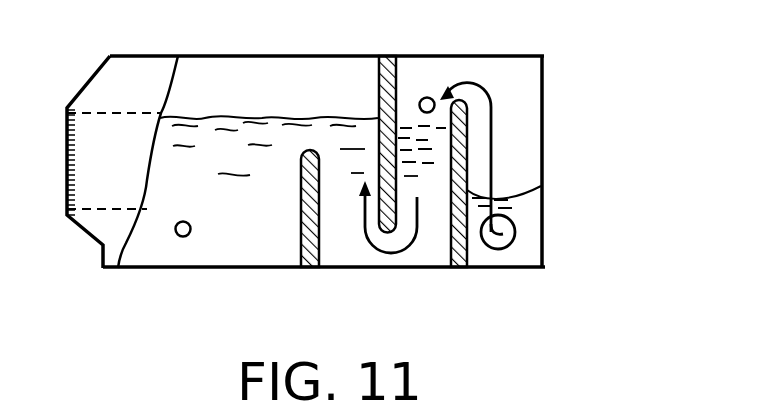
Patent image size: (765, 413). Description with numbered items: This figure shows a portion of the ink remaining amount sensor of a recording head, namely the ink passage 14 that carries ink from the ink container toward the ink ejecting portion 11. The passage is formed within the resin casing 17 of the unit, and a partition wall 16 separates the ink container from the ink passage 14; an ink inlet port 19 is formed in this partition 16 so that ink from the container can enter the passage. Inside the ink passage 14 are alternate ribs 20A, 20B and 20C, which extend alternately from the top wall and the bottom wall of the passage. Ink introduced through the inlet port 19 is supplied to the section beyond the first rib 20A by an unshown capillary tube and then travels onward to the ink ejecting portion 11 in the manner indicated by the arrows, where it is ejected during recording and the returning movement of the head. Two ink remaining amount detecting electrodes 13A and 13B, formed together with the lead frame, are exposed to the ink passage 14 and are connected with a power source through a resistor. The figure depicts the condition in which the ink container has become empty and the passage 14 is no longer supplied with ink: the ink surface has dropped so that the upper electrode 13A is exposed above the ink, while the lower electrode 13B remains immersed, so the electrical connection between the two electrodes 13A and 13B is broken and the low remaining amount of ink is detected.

The ink ejecting portion 11 is at (67, 146).
The ink passage 14 is at (280, 73).
The casing 17 is at (543, 87).
The partition wall 16 is at (527, 158).
The first rib 20A is at (455, 245).
The rib 20B is at (402, 63).
The rib 20C is at (301, 252).
The ink remaining amount detecting electrode 13A is at (430, 97).
The ink remaining amount detecting electrode 13B is at (178, 238).
The ink inlet port 19 is at (513, 233).